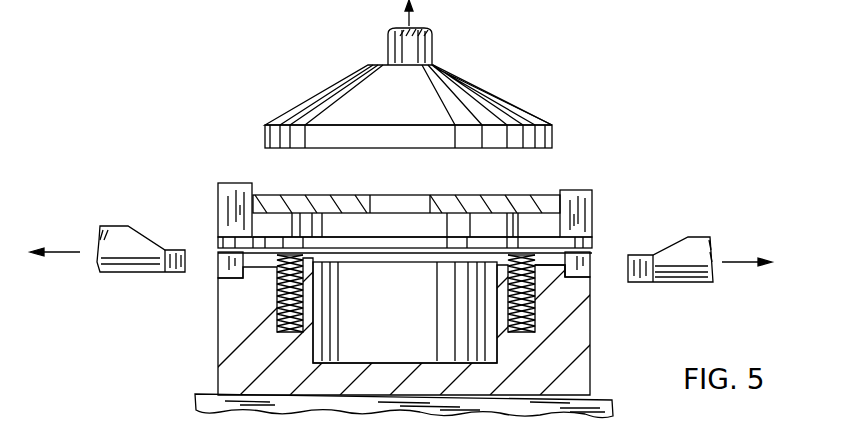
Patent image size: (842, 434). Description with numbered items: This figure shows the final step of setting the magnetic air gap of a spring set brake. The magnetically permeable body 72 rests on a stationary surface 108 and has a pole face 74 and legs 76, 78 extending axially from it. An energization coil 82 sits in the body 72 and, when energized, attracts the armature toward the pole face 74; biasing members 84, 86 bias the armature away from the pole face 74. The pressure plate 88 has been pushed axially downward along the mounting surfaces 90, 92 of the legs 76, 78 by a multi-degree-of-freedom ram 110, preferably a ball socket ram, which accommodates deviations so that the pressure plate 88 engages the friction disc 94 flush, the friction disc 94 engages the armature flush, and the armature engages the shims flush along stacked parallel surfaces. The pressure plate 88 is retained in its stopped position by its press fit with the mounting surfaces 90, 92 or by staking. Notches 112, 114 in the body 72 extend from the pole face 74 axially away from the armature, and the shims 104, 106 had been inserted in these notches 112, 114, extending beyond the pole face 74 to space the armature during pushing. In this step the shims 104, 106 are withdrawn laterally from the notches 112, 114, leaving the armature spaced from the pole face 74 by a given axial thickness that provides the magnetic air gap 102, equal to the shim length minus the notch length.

The magnetically permeable body 72 is at (572, 366).
The pole face 74 is at (547, 296).
The leg 76 is at (588, 232).
The leg 78 is at (222, 198).
The energization coil 82 is at (458, 366).
The biasing member 84 is at (538, 326).
The biasing member 86 is at (278, 306).
The pressure plate 88 is at (488, 205).
The mounting surface 90 is at (557, 192).
The mounting surface 92 is at (258, 190).
The friction disc 94 is at (505, 229).
The magnetic air gap 102 is at (320, 262).
The shim 104 is at (648, 262).
The shim 106 is at (172, 273).
The stationary surface 108 is at (612, 411).
The multi-degree-of-freedom ram 110 is at (468, 90).
The notch 112 is at (586, 276).
The notch 114 is at (221, 279).